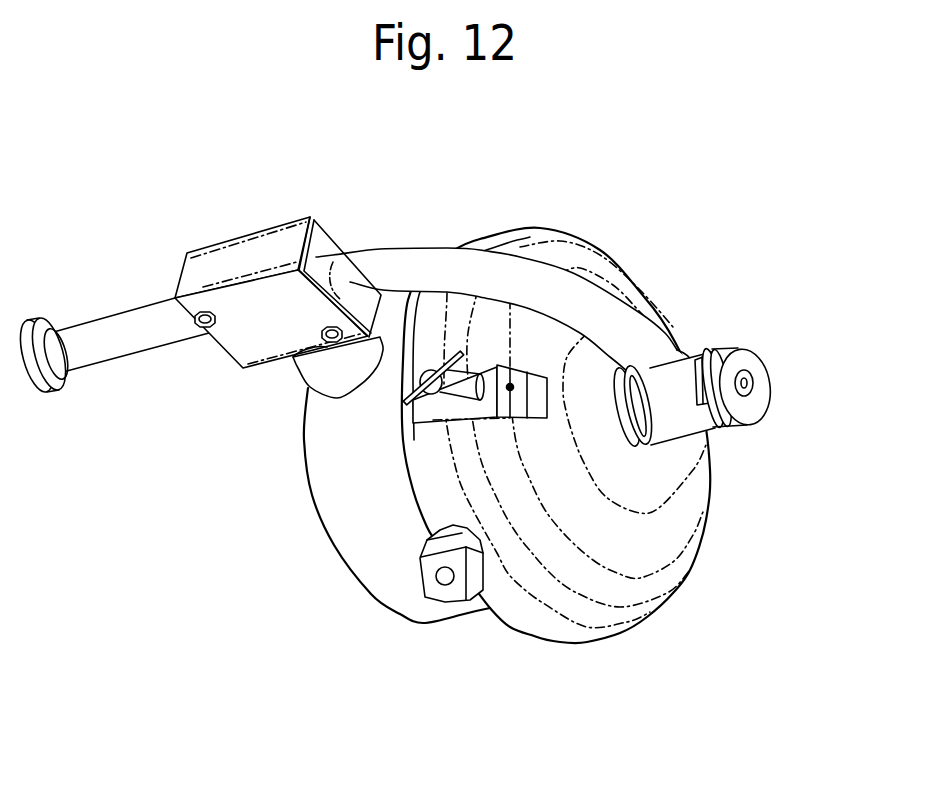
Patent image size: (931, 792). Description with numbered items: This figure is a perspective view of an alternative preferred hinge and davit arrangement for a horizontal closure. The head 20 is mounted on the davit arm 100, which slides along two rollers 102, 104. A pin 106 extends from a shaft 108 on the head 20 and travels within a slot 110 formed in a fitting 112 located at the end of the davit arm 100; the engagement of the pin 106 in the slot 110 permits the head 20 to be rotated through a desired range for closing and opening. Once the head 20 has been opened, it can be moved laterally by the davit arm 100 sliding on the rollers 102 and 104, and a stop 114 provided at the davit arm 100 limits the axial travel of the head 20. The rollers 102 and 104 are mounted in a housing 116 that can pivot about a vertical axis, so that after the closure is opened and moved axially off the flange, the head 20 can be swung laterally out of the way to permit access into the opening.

The head 20 is at (547, 230).
The davit arm 100 is at (383, 256).
The roller 102 is at (203, 331).
The roller 104 is at (297, 358).
The pin 106 is at (755, 359).
The shaft 108 is at (758, 403).
The slot 110 is at (720, 430).
The fitting 112 is at (692, 363).
The stop 114 is at (40, 322).
The housing 116 is at (237, 250).